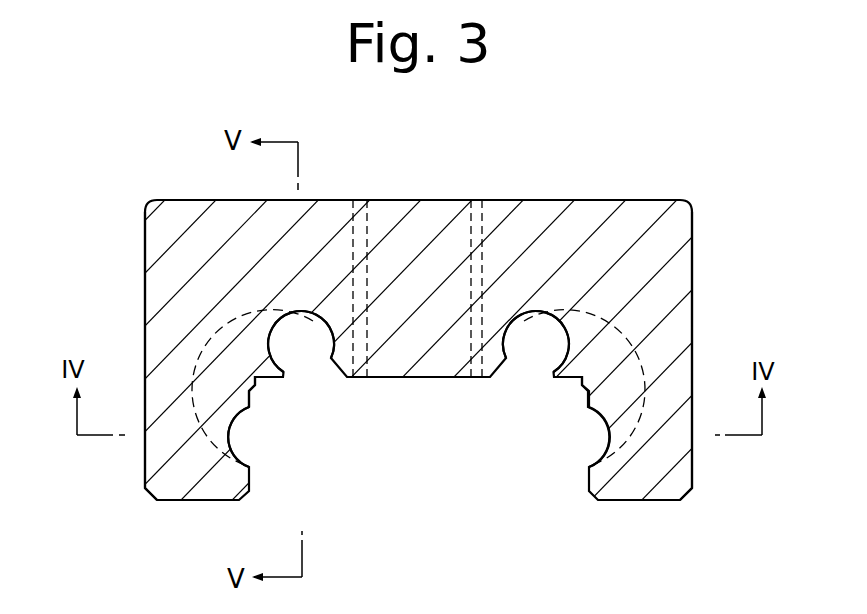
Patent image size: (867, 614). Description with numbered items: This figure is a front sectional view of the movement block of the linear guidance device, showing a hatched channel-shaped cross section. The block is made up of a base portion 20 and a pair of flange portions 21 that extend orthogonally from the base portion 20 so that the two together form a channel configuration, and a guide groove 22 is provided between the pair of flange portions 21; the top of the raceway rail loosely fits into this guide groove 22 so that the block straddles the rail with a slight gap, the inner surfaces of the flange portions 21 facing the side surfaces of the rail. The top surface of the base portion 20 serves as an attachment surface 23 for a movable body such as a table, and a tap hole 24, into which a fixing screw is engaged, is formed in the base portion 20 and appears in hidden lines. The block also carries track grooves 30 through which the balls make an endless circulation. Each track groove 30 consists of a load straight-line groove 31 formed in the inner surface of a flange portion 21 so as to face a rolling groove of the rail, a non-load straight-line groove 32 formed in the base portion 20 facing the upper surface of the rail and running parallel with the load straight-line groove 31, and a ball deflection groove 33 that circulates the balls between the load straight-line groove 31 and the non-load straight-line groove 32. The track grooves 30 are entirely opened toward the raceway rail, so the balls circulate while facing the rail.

The base portion 20 is at (536, 217).
The flange portions 21 is at (146, 479).
The guide groove 22 is at (405, 378).
The attachment surface 23 is at (630, 200).
The tap hole 24 is at (471, 224).
The track grooves 30 is at (277, 394).
The load straight-line groove 31 is at (229, 438).
The non-load straight-line groove 32 is at (318, 343).
The ball deflection groove 33 is at (196, 392).